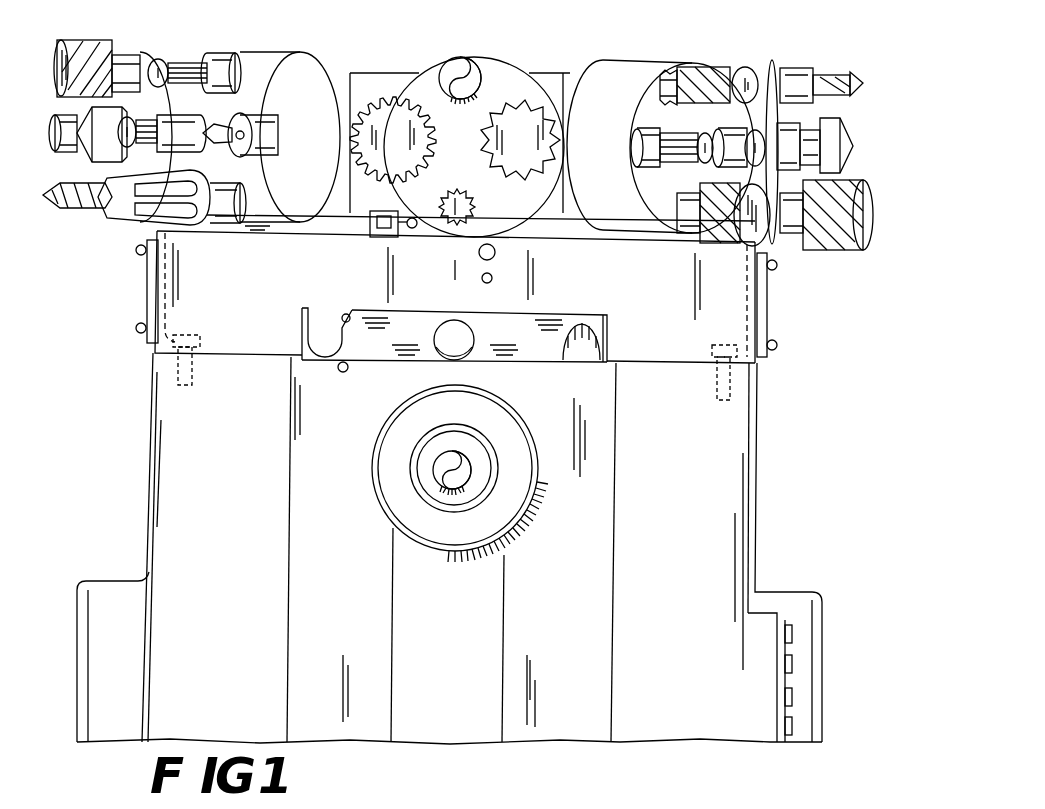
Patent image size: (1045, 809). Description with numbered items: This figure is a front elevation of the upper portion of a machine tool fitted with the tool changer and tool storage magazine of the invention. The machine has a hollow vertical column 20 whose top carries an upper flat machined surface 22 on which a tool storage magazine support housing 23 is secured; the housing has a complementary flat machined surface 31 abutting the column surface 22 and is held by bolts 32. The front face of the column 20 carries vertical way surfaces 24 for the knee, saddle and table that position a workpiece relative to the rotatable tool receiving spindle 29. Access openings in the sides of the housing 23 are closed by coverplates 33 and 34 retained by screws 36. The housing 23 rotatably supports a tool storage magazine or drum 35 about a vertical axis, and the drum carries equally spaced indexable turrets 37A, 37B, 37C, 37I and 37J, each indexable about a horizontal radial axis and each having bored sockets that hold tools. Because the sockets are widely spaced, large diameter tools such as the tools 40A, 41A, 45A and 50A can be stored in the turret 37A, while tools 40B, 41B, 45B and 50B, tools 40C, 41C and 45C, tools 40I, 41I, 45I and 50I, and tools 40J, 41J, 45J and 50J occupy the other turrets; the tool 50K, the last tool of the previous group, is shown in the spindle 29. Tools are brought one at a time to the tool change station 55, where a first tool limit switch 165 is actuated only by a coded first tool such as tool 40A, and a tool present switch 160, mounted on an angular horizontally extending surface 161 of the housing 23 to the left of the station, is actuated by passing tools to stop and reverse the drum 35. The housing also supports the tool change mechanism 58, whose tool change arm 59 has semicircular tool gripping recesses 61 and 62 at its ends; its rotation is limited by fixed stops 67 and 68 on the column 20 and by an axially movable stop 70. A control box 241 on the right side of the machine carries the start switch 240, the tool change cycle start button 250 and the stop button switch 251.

The column 20 is at (723, 452).
The upper flat machined surface 22 is at (233, 347).
The tool storage magazine support housing 23 is at (703, 353).
The vertical way surfaces 24 is at (365, 728).
The spindle 29 is at (450, 513).
The complementary flat machined surface 31 is at (260, 370).
The bolts 32 is at (170, 377).
The coverplate 33 is at (770, 317).
The coverplate 34 is at (145, 278).
The tool storage magazine or drum 35 is at (405, 66).
The screws 36 is at (140, 330).
The turret 37A is at (497, 70).
The turret 37B is at (660, 146).
The turret 37C is at (770, 73).
The turret 37I is at (152, 57).
The turret 37J is at (240, 141).
The tool 40A is at (475, 205).
The tool 40B is at (752, 232).
The tool 40C is at (863, 245).
The tool 40I is at (58, 143).
The tool 40J is at (170, 115).
The tool 41A is at (387, 107).
The tool 41B is at (705, 155).
The tool 41C is at (783, 137).
The tool 41I is at (68, 40).
The tool 41J is at (192, 53).
The tool 45A is at (455, 62).
The tool 45B is at (690, 73).
The tool 45C is at (815, 82).
The tool 45I is at (88, 134).
The tool 45J is at (217, 130).
The tool 50A is at (517, 117).
The tool 50B is at (727, 132).
The tool 50I is at (57, 205).
The tool 50J is at (155, 215).
The tool 50K is at (440, 465).
The tool change station 55 is at (454, 270).
The tool change mechanism 58 is at (508, 368).
The tool change arm 59 is at (433, 355).
The tool gripping recess 61 is at (305, 302).
The tool gripping recess 62 is at (605, 350).
The fixed stop 67 is at (343, 373).
The fixed stop 68 is at (490, 282).
The axially movable stop 70 is at (496, 253).
The tool present switch 160 is at (383, 225).
The angular horizontally extending surface 161 is at (327, 231).
The first tool limit switch 165 is at (480, 238).
The start switch 240 is at (792, 630).
The control box 241 is at (767, 728).
The tool change cycle start button 250 is at (792, 667).
The stop button switch 251 is at (792, 697).